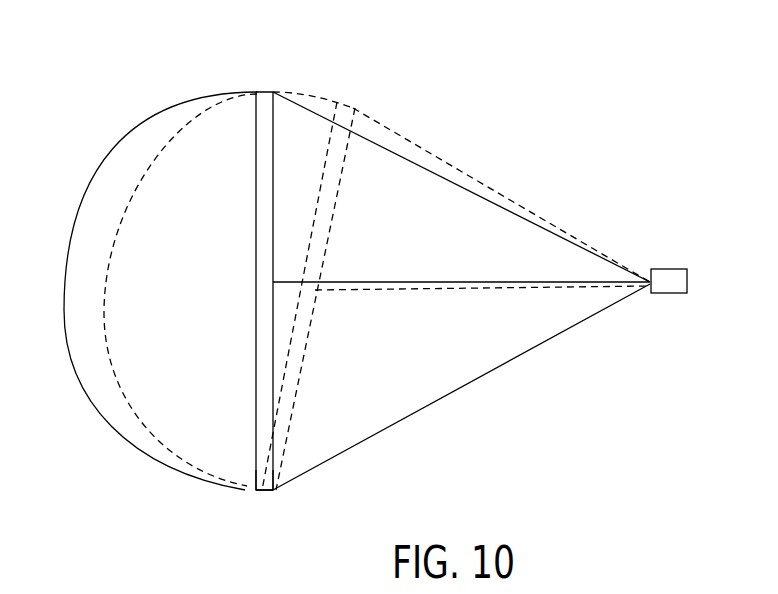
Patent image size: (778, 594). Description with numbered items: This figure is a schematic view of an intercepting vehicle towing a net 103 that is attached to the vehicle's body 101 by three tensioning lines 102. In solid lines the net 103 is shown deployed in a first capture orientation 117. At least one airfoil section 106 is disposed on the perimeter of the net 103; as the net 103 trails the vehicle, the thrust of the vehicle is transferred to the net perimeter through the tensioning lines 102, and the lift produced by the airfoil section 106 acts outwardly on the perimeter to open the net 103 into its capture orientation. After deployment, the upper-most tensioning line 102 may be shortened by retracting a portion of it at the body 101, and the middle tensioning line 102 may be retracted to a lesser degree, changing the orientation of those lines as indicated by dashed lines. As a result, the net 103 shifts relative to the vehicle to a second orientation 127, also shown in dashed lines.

The body 101 is at (677, 293).
The tensioning line 102 is at (388, 148).
The net 103 is at (213, 95).
The airfoil section 106 is at (253, 466).
The first capture orientation 117 is at (128, 137).
The second orientation 127 is at (203, 120).